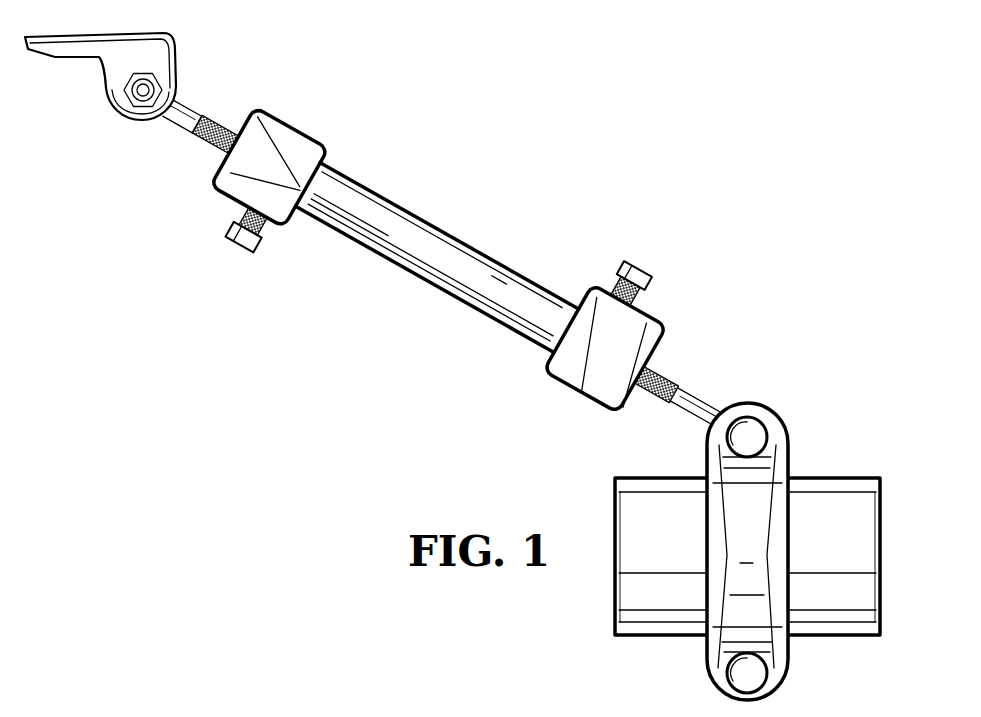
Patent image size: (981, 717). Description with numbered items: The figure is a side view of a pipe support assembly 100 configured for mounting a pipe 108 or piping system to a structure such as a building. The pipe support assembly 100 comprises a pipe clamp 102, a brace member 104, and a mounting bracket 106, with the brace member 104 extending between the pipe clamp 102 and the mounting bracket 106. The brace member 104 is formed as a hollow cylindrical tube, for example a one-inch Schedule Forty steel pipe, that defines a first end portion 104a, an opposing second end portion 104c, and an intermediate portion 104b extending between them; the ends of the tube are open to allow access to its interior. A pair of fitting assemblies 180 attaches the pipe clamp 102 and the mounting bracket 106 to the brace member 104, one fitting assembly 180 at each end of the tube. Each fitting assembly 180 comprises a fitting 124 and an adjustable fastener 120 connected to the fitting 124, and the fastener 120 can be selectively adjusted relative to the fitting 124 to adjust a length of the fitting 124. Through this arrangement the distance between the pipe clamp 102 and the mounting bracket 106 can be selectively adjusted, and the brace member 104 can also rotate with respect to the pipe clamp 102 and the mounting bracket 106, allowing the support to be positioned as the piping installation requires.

The pipe support assembly 100 is at (751, 209).
The pipe clamp 102 is at (745, 594).
The brace member 104 is at (467, 234).
The first end portion 104a is at (537, 348).
The intermediate portion 104b is at (417, 278).
The second end portion 104c is at (310, 213).
The mounting bracket 106 is at (142, 50).
The pipe 108 is at (833, 507).
The adjustable fastener 120 is at (207, 139).
The fitting 124 is at (300, 150).
The fitting assembly 180 is at (252, 75).